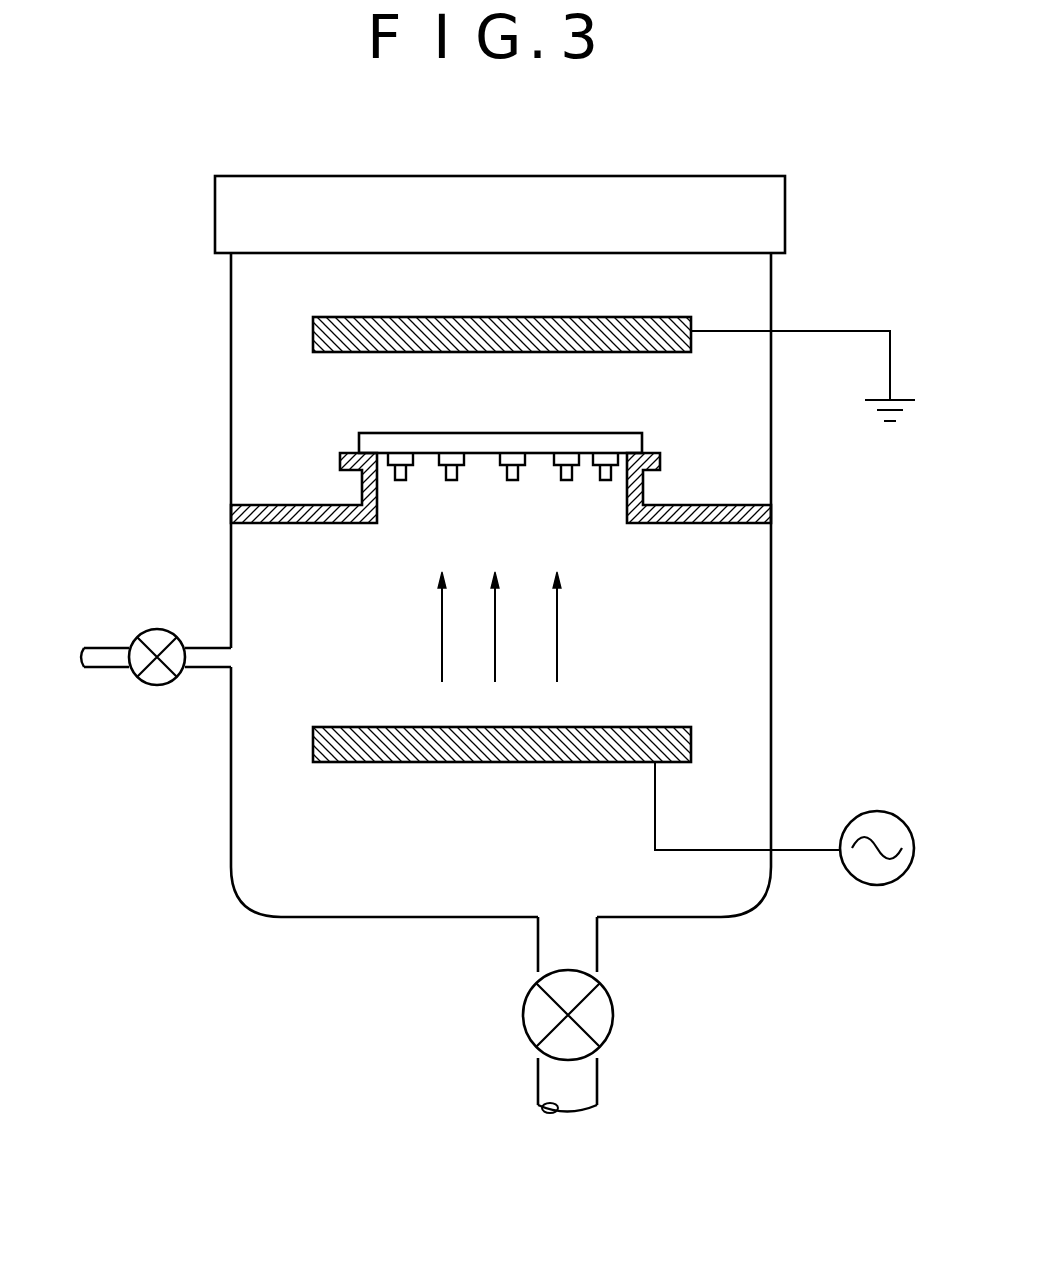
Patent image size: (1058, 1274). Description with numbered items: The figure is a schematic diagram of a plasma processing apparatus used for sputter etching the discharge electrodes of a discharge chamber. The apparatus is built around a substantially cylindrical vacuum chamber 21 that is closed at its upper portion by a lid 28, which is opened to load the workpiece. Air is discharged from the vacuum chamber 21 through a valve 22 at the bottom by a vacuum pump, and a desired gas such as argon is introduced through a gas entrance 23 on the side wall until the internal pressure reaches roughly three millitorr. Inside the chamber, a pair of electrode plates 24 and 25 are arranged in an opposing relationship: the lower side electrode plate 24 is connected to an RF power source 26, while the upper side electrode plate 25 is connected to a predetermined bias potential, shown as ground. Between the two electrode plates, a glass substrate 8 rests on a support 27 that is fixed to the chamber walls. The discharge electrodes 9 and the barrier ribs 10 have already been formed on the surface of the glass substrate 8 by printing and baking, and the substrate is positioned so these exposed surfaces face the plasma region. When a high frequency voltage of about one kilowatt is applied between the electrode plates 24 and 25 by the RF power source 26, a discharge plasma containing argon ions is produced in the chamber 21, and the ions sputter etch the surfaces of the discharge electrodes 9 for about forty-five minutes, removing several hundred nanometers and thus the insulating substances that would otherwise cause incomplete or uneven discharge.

The glass substrate 8 is at (640, 432).
The discharge electrodes 9 is at (415, 458).
The barrier ribs 10 is at (401, 481).
The vacuum chamber 21 is at (771, 283).
The valve 22 is at (613, 1013).
The gas entrance 23 is at (200, 648).
The lower side electrode plate 24 is at (393, 763).
The upper side electrode plate 25 is at (375, 317).
The RF power source 26 is at (880, 885).
The support 27 is at (710, 523).
The lid 28 is at (626, 176).